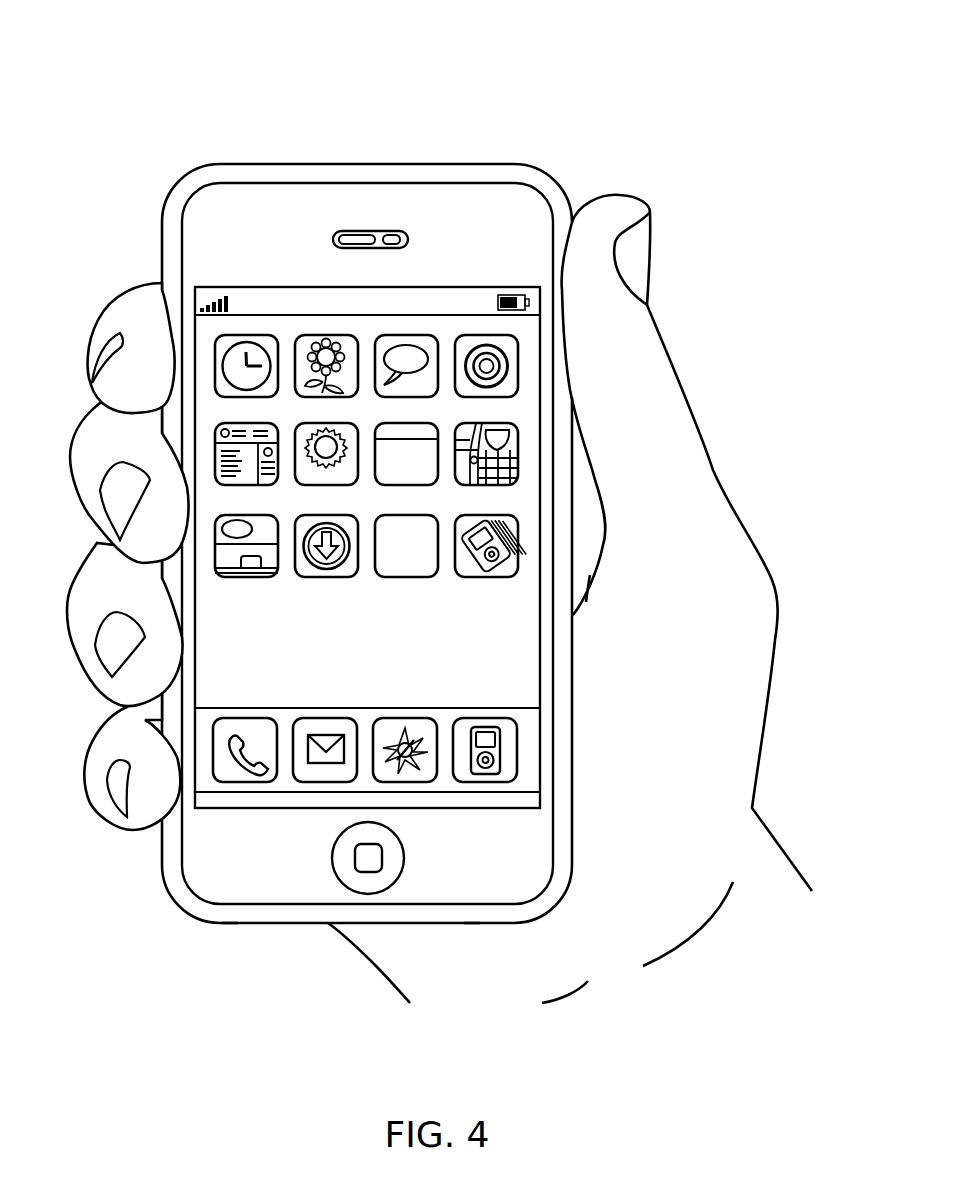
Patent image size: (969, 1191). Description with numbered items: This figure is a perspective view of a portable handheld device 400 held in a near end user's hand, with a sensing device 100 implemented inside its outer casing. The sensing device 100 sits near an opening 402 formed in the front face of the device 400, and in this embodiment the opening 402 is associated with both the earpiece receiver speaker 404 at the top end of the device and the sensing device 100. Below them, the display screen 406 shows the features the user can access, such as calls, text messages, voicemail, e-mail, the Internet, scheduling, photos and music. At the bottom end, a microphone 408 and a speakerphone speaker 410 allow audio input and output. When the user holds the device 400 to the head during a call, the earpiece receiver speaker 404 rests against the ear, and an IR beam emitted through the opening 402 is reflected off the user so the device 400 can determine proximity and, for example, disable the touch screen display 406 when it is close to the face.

The portable handheld device 400 is at (518, 164).
The opening 402 is at (333, 238).
The earpiece receiver speaker 404 is at (350, 232).
The sensing device 100 is at (394, 232).
The display screen 406 is at (450, 323).
The microphone 408 is at (472, 924).
The speakerphone speaker 410 is at (230, 924).